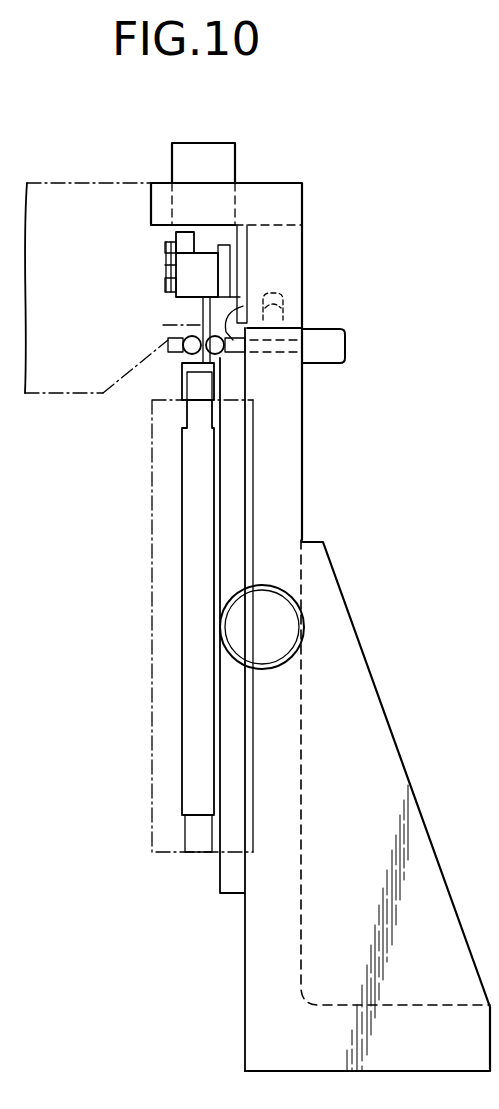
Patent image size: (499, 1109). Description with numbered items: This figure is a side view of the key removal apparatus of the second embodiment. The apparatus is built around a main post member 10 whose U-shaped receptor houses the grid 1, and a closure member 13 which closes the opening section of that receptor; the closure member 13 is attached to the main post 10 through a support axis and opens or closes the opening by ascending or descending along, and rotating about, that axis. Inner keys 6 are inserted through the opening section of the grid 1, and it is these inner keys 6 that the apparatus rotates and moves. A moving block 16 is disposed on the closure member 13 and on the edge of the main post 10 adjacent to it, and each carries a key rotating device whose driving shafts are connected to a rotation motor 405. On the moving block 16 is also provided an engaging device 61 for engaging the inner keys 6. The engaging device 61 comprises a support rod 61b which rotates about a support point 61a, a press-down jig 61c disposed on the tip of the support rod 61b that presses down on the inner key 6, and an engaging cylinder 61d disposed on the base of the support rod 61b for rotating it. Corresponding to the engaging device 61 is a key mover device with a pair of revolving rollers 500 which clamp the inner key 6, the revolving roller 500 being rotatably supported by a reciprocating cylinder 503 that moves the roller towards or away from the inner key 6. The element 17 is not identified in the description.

The grid 1 is at (153, 740).
The inner key 6 is at (200, 320).
The main post member 10 is at (365, 708).
The closure member 13 is at (290, 260).
The moving block 16 is at (192, 296).
The guide hook 17 is at (228, 350).
The engaging device 61 is at (150, 270).
The support point 61a is at (167, 260).
The support rod 61b is at (167, 248).
The press-down jig 61c is at (168, 292).
The engaging cylinder 61d is at (186, 232).
The rotation motor 405 is at (223, 162).
The revolving roller 500 is at (175, 352).
The reciprocating cylinder 503 is at (323, 337).